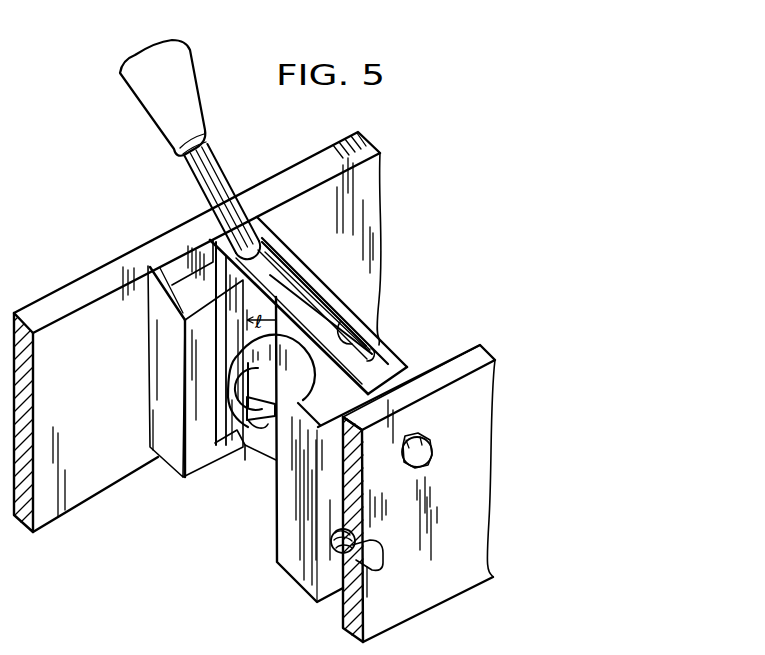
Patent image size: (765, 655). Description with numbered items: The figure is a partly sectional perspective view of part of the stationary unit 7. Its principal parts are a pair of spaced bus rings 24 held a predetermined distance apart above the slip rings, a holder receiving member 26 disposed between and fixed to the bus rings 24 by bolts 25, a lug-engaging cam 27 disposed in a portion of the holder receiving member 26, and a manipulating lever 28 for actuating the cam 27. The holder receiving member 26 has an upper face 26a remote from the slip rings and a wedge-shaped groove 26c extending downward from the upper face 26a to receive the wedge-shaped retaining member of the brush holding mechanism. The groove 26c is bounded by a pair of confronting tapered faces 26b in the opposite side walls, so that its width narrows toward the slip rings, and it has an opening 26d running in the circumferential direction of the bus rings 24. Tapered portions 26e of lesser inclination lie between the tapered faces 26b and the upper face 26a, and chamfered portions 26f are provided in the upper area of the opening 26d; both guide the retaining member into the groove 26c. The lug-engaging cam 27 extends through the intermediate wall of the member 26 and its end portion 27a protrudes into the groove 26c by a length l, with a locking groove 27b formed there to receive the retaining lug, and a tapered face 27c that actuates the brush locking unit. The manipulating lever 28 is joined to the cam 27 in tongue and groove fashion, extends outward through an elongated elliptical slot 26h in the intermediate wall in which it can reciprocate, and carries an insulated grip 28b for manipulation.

The stationary unit 7 is at (107, 233).
The bus rings 24 is at (67, 493).
The bolts 25 is at (427, 463).
The holder receiving member 26 is at (412, 362).
The upper face 26a is at (220, 235).
The tapered faces 26b is at (200, 352).
The wedge-shaped groove 26c is at (246, 296).
The opening 26d is at (252, 530).
The tapered portions 26e is at (182, 270).
The chamfered portions 26f is at (178, 300).
The slot 26h is at (370, 350).
The lug-engaging cam 27 is at (345, 315).
The end portion 27a is at (240, 455).
The locking groove 27b is at (242, 394).
The tapered face 27c is at (267, 453).
The manipulating lever 28 is at (227, 178).
The grip 28b is at (202, 101).